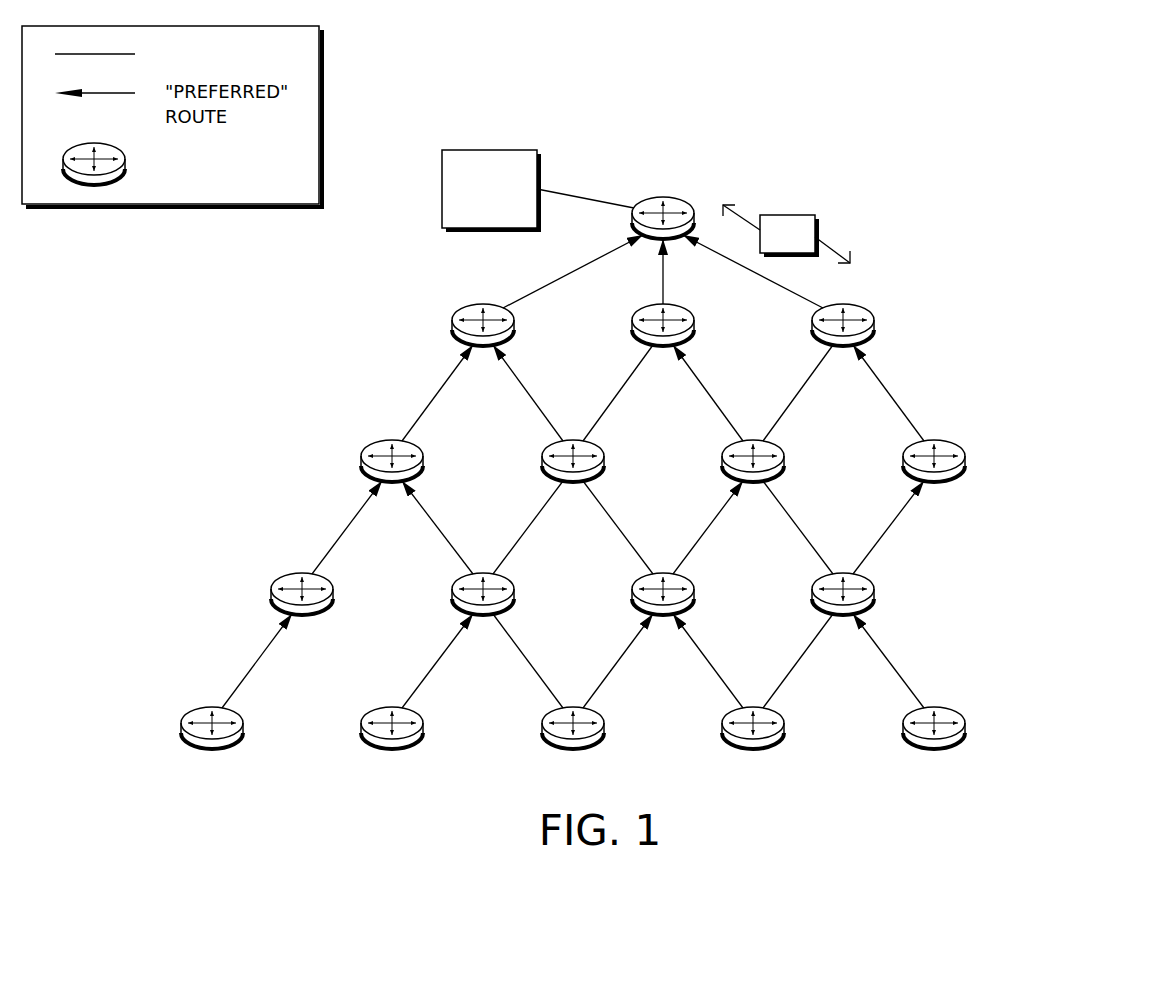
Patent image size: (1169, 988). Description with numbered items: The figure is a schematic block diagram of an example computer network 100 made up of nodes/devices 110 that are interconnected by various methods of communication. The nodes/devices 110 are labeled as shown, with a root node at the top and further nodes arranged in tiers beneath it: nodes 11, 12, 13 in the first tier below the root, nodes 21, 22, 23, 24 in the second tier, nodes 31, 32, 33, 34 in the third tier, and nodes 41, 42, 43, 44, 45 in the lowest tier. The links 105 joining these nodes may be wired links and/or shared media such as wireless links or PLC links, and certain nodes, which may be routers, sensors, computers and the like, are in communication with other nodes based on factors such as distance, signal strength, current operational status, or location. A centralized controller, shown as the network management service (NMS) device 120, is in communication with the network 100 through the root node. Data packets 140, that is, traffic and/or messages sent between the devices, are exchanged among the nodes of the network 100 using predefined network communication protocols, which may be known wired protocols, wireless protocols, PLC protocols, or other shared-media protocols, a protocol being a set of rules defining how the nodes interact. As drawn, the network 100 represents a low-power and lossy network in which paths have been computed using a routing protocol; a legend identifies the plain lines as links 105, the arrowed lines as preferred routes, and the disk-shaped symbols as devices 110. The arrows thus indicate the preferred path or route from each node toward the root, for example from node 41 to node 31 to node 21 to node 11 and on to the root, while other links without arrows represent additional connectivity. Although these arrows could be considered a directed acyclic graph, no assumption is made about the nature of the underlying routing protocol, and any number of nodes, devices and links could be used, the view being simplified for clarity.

The computer network 100 is at (1080, 80).
The links 105 is at (489, 375).
The nodes/devices 110 is at (167, 164).
The network management service (NMS) device 120 is at (490, 190).
The data packets 140 is at (786, 234).
The node 11 is at (483, 343).
The node 12 is at (663, 343).
The node 13 is at (843, 343).
The node 21 is at (392, 478).
The node 22 is at (573, 478).
The node 23 is at (753, 478).
The node 24 is at (934, 478).
The node 31 is at (302, 611).
The node 32 is at (483, 611).
The node 33 is at (663, 611).
The node 34 is at (843, 611).
The node 41 is at (212, 744).
The node 42 is at (392, 744).
The node 43 is at (573, 744).
The node 44 is at (753, 744).
The node 45 is at (934, 744).